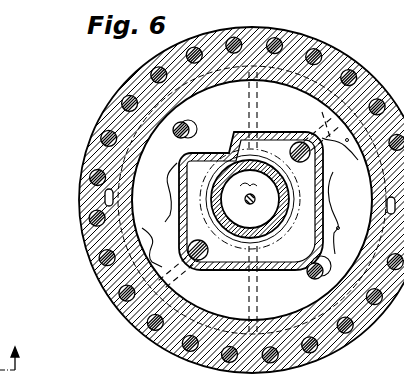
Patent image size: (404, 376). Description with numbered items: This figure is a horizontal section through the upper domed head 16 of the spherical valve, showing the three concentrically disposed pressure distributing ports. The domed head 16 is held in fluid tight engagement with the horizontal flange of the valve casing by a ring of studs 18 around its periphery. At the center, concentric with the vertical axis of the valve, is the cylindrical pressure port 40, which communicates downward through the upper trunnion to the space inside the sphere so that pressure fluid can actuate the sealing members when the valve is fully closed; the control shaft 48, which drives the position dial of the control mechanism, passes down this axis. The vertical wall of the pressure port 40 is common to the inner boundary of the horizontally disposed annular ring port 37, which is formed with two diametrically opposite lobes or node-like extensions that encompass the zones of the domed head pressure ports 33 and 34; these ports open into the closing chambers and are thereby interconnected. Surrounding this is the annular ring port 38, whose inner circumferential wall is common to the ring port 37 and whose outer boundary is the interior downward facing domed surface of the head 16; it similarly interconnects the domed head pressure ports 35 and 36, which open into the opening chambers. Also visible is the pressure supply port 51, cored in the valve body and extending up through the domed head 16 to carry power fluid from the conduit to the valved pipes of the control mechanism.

The upper domed head 16 is at (370, 72).
The studs 18 is at (366, 305).
The pressure supply port 51 is at (104, 197).
The annular ring port 37 is at (304, 213).
The cylindrical pressure port 40 is at (248, 200).
The control shaft 48 is at (260, 201).
The domed head pressure port 33 is at (300, 141).
The domed head pressure port 34 is at (192, 261).
The domed head pressure port 35 is at (189, 125).
The domed head pressure port 36 is at (306, 276).
The annular ring port 38 is at (166, 221).